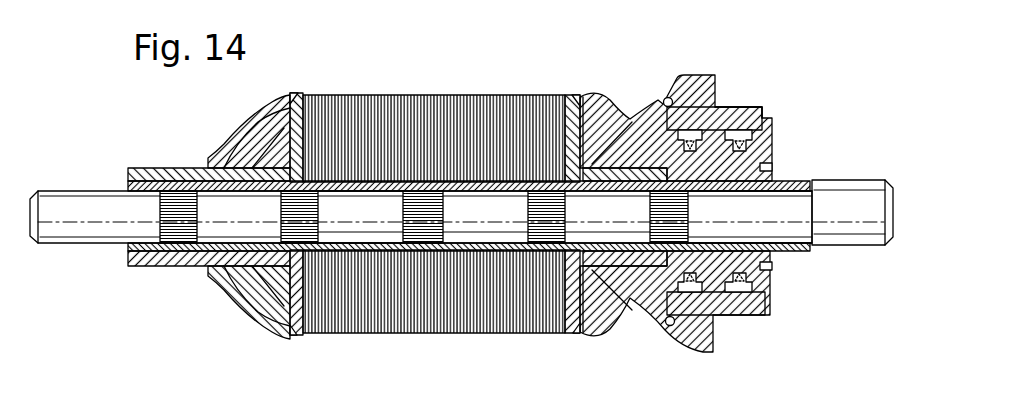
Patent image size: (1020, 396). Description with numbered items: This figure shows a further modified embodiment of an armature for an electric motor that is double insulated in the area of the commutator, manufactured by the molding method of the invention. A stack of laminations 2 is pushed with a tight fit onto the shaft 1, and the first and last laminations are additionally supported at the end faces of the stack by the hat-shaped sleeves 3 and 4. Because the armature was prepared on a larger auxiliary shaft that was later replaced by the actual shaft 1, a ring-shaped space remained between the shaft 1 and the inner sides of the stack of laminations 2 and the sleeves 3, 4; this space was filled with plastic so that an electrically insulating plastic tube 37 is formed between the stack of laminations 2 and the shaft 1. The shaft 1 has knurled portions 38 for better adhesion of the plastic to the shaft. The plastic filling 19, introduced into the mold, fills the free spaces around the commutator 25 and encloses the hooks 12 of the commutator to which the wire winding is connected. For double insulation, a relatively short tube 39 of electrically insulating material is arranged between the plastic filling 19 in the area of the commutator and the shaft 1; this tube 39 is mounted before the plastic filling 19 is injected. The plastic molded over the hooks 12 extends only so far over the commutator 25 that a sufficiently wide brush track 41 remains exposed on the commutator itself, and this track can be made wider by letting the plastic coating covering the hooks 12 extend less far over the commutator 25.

The shaft 1 is at (92, 208).
The stack of laminations 2 is at (425, 113).
The hat-shaped sleeve 3 is at (178, 268).
The hat-shaped sleeve 4 is at (618, 253).
The hooks 12 is at (675, 96).
The plastic filling 19 is at (257, 135).
The commutator 25 is at (732, 100).
The plastic tube 37 is at (333, 243).
The knurled portions 38 is at (427, 212).
The tube 39 is at (720, 240).
The brush track 41 is at (749, 106).